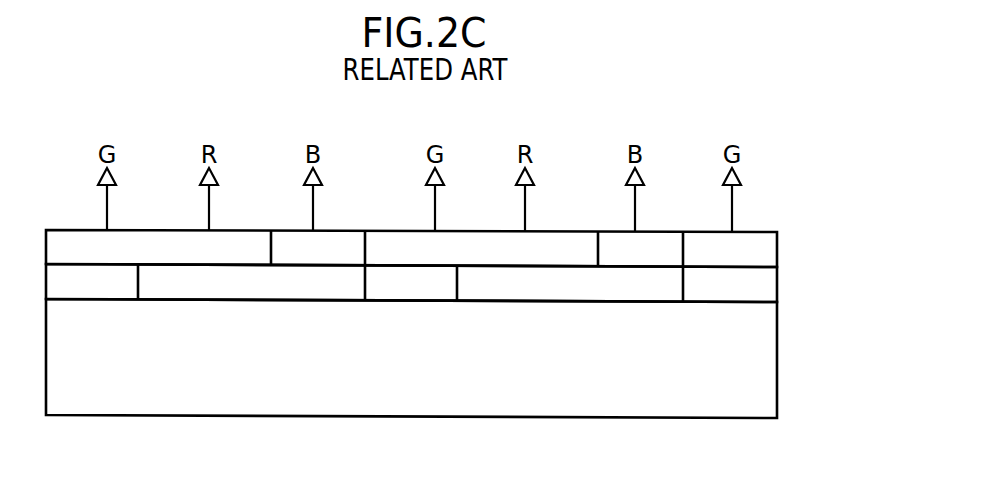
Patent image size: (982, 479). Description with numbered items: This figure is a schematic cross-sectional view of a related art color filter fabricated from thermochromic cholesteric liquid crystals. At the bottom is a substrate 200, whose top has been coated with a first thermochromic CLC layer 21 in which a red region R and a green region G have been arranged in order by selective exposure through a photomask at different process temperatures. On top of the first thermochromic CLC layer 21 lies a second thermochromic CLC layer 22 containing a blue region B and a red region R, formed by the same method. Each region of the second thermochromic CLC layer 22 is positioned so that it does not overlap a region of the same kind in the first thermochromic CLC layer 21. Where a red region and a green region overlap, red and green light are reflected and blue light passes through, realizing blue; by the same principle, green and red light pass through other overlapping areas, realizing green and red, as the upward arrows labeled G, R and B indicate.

The second thermochromic CLC layer 22 is at (789, 208).
The first thermochromic CLC layer 21 is at (799, 271).
The substrate 200 is at (757, 362).